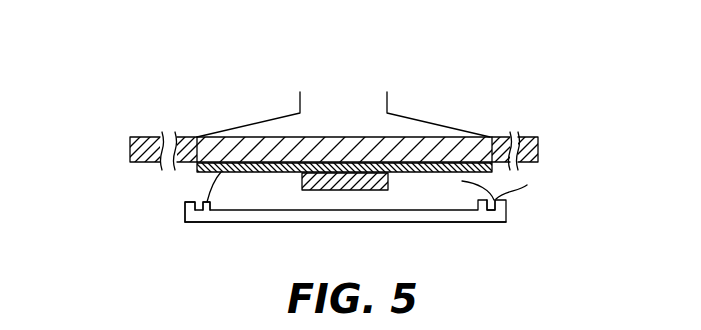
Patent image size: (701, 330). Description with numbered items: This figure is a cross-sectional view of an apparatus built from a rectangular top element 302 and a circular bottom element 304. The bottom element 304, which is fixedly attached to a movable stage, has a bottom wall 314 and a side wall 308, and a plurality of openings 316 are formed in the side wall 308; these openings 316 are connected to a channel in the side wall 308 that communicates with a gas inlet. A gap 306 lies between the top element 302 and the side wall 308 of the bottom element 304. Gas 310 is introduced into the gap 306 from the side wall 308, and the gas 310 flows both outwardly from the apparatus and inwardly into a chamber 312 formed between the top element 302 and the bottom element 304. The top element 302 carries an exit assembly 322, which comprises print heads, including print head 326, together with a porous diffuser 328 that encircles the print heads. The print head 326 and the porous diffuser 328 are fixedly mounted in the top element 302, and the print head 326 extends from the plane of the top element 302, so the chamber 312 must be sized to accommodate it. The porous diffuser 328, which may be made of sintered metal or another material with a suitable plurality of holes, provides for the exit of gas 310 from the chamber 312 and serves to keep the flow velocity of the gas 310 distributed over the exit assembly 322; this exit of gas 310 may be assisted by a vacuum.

The top element 302 is at (521, 137).
The bottom element 304 is at (498, 222).
The gap 306 is at (185, 188).
The side wall 308 is at (183, 208).
The gas 310 is at (455, 180).
The chamber 312 is at (206, 184).
The bottom wall 314 is at (232, 223).
The openings 316 is at (497, 193).
The exit assembly 322 is at (450, 109).
The print head 326 is at (373, 191).
The porous diffuser 328 is at (207, 203).